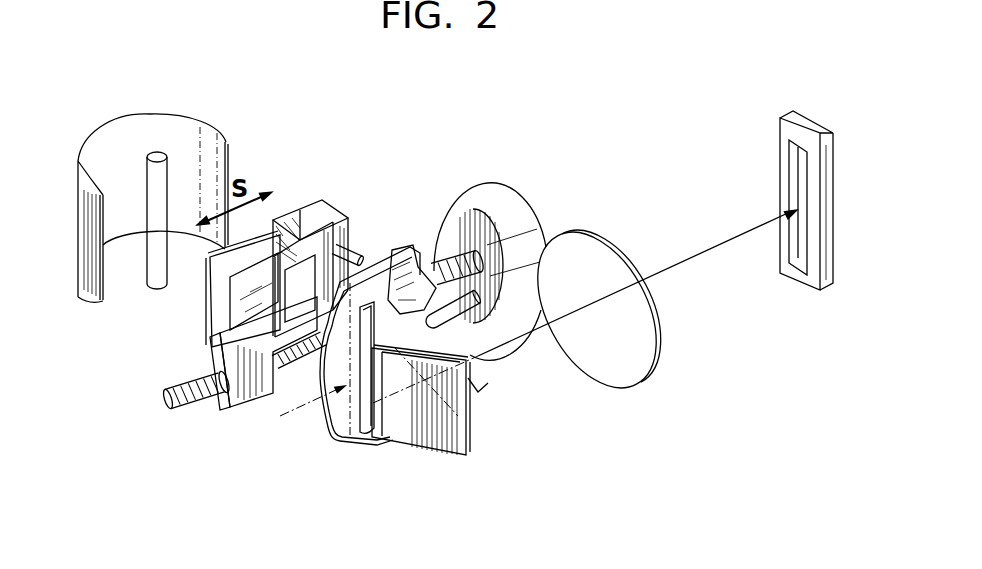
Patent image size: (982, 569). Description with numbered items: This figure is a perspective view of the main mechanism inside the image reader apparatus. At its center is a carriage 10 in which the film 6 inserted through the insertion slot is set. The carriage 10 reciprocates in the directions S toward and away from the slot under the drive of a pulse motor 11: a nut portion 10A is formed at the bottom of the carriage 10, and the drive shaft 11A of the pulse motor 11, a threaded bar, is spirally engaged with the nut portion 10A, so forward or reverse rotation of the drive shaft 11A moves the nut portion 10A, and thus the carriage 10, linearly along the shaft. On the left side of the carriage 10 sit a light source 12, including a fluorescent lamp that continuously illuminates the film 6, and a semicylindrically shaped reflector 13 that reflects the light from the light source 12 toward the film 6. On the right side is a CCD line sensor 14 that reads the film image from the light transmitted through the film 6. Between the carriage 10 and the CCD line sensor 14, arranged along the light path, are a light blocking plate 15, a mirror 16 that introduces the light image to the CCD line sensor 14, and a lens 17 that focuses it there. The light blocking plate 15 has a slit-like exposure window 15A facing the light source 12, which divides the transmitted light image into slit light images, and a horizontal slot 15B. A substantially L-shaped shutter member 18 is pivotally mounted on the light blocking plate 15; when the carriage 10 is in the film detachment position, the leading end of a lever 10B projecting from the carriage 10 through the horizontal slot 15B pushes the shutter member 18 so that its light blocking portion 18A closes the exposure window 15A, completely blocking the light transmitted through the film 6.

The film 6 is at (207, 293).
The carriage 10 is at (333, 205).
The nut portion 10A is at (222, 405).
The lever 10B is at (368, 242).
The pulse motor 11 is at (502, 203).
The drive shaft 11A is at (167, 398).
The light source 12 is at (160, 155).
The reflector 13 is at (117, 115).
The CCD line sensor 14 is at (810, 292).
The light blocking plate 15 is at (422, 245).
The exposure window 15A is at (350, 430).
The horizontal slot 15B is at (510, 242).
The mirror 16 is at (423, 436).
The lens 17 is at (628, 245).
The shutter member 18 is at (280, 418).
The light blocking portion 18A is at (480, 375).